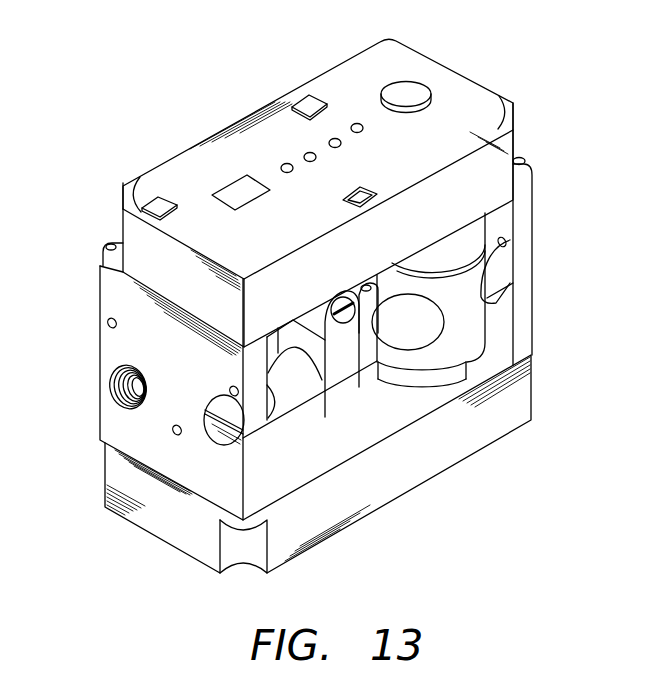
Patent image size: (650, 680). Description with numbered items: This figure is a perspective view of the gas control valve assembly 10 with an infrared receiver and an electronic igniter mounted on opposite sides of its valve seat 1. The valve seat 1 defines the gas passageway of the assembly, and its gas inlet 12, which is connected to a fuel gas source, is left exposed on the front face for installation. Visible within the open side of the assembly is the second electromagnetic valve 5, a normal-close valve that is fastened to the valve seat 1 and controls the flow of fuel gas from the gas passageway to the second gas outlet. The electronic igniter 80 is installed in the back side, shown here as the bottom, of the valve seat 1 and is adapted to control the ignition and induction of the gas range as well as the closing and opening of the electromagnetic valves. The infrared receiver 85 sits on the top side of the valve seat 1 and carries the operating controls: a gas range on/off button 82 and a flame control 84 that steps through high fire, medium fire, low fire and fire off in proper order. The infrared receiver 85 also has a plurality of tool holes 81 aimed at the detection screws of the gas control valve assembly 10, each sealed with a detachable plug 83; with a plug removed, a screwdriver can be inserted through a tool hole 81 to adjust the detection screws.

The valve seat 1 is at (108, 342).
The second electromagnetic valve 5 is at (433, 380).
The gas control valve assembly 10 is at (536, 277).
The gas inlet 12 is at (117, 398).
The electronic igniter 80 is at (163, 527).
The tool holes 81 is at (365, 192).
The gas range on/off button 82 is at (430, 95).
The detachable plug 83 is at (160, 207).
The flame control 84 is at (233, 190).
The infrared receiver 85 is at (350, 87).